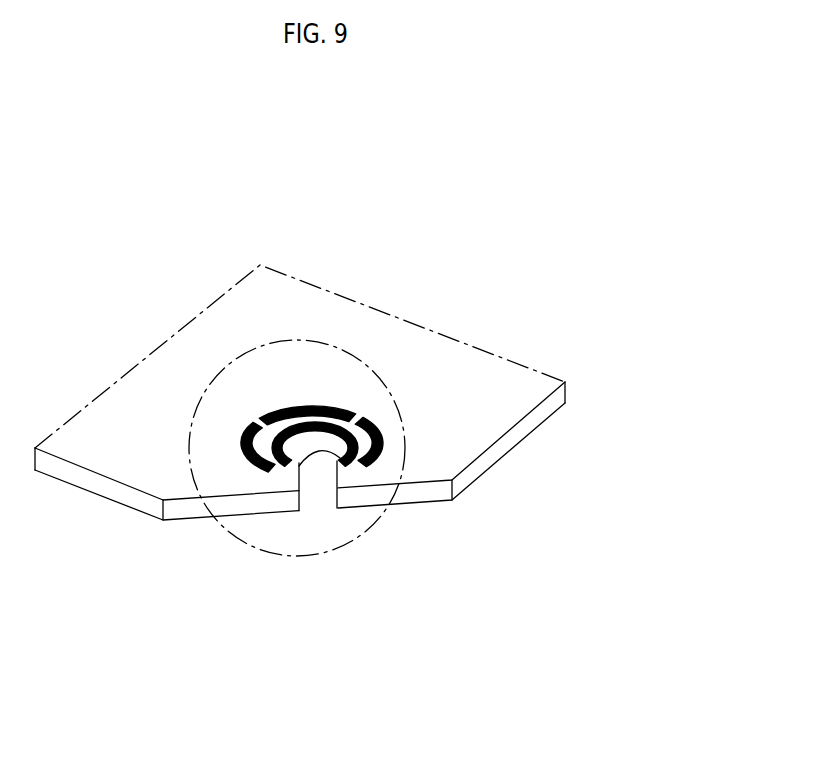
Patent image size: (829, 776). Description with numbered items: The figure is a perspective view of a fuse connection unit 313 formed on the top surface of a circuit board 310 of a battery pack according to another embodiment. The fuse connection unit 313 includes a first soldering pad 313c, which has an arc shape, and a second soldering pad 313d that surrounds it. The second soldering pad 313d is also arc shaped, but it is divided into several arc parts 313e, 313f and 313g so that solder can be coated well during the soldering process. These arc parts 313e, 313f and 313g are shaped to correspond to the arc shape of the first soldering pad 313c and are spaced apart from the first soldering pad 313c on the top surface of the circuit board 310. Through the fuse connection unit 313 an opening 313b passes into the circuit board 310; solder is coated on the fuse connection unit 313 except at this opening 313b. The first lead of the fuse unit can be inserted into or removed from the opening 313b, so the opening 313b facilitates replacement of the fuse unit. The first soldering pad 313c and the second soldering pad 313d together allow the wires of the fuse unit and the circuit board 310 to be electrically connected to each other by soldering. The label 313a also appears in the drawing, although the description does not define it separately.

The circuit board 310 is at (473, 433).
The fuse connection unit 313 is at (232, 362).
The through hole 313a is at (387, 432).
The opening 313b is at (317, 490).
The first soldering pad 313c is at (282, 465).
The second soldering pad 313d is at (400, 324).
The arc part 313e is at (245, 440).
The arc part 313f is at (343, 410).
The arc part 313g is at (454, 374).